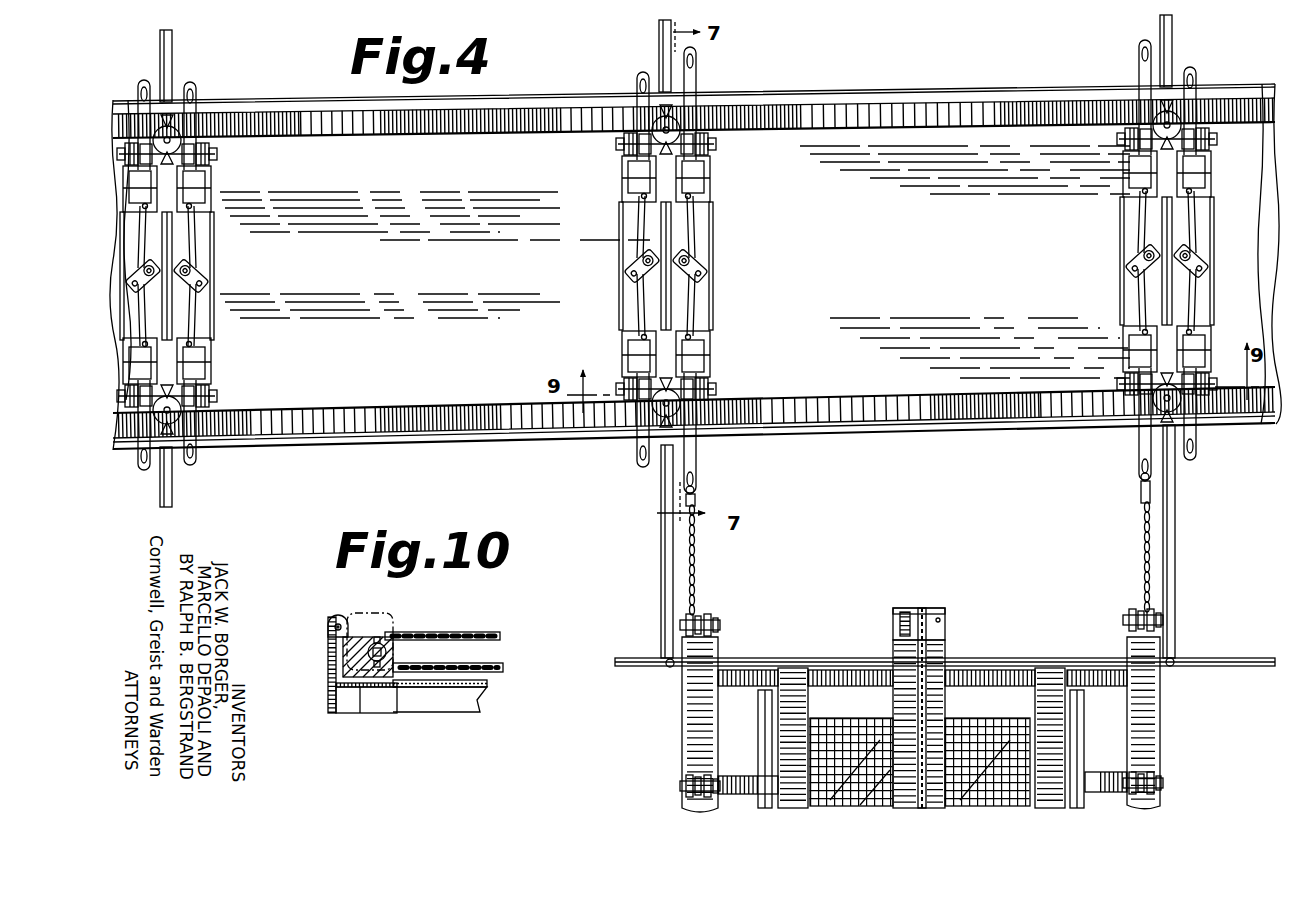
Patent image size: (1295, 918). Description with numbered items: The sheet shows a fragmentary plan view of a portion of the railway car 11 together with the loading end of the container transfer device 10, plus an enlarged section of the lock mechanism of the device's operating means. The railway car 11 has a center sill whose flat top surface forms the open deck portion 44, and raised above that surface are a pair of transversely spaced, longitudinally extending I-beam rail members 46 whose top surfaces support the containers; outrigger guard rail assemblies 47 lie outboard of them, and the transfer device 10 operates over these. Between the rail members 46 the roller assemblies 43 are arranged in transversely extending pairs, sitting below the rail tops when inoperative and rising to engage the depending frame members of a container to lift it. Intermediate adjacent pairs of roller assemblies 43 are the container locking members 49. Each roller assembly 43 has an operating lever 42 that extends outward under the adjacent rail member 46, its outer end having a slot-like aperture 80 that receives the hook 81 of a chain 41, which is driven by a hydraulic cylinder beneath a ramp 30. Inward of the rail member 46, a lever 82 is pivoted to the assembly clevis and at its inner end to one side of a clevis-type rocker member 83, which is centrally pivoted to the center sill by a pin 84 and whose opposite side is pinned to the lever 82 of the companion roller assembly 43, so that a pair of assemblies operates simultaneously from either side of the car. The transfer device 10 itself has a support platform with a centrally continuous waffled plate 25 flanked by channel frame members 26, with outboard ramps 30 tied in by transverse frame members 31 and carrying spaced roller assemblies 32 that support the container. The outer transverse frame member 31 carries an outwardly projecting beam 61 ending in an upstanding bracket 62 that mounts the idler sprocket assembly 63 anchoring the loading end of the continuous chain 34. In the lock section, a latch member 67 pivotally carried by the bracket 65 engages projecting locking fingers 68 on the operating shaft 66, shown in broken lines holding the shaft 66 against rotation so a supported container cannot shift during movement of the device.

In FIG. 4, the container transfer device 10 is at (1198, 693).
In FIG. 4, the railway car 11 is at (813, 82).
In FIG. 4, the waffled plate 25 is at (868, 700).
In FIG. 10, the waffled plate 25 is at (487, 682).
In FIG. 4, the channel frame members 26 is at (788, 682).
In FIG. 4, the ramps 30 is at (691, 710).
In FIG. 4, the transverse frame members 31 is at (980, 666).
In FIG. 10, the transverse frame members 31 is at (328, 700).
In FIG. 4, the roller assemblies 32 is at (700, 613).
In FIG. 4, the continuous chain 34 is at (918, 647).
In FIG. 10, the continuous chain 34 is at (478, 632).
In FIG. 4, the chain 41 is at (697, 557).
In FIG. 4, the operating lever 42 is at (147, 80).
In FIG. 4, the roller assemblies 43 is at (121, 138).
In FIG. 4, the open deck portion 44 is at (456, 266).
In FIG. 4, the rail members 46 is at (962, 108).
In FIG. 4, the outrigger guard rail assemblies 47 is at (172, 46).
In FIG. 4, the container locking members 49 is at (178, 132).
In FIG. 4, the outwardly projecting beam 61 is at (945, 642).
In FIG. 4, the upstanding bracket 62 is at (943, 608).
In FIG. 4, the sprocket assembly 63 is at (913, 610).
In FIG. 10, the bracket 65 is at (365, 713).
In FIG. 10, the shaft 66 is at (375, 645).
In FIG. 10, the latch member 67 is at (372, 628).
In FIG. 10, the locking fingers 68 is at (390, 652).
In FIG. 4, the slot-like aperture 80 is at (650, 464).
In FIG. 4, the hook 81 is at (697, 500).
In FIG. 4, the lever 82 is at (190, 212).
In FIG. 4, the rocker member 83 is at (192, 277).
In FIG. 4, the pin 84 is at (178, 255).